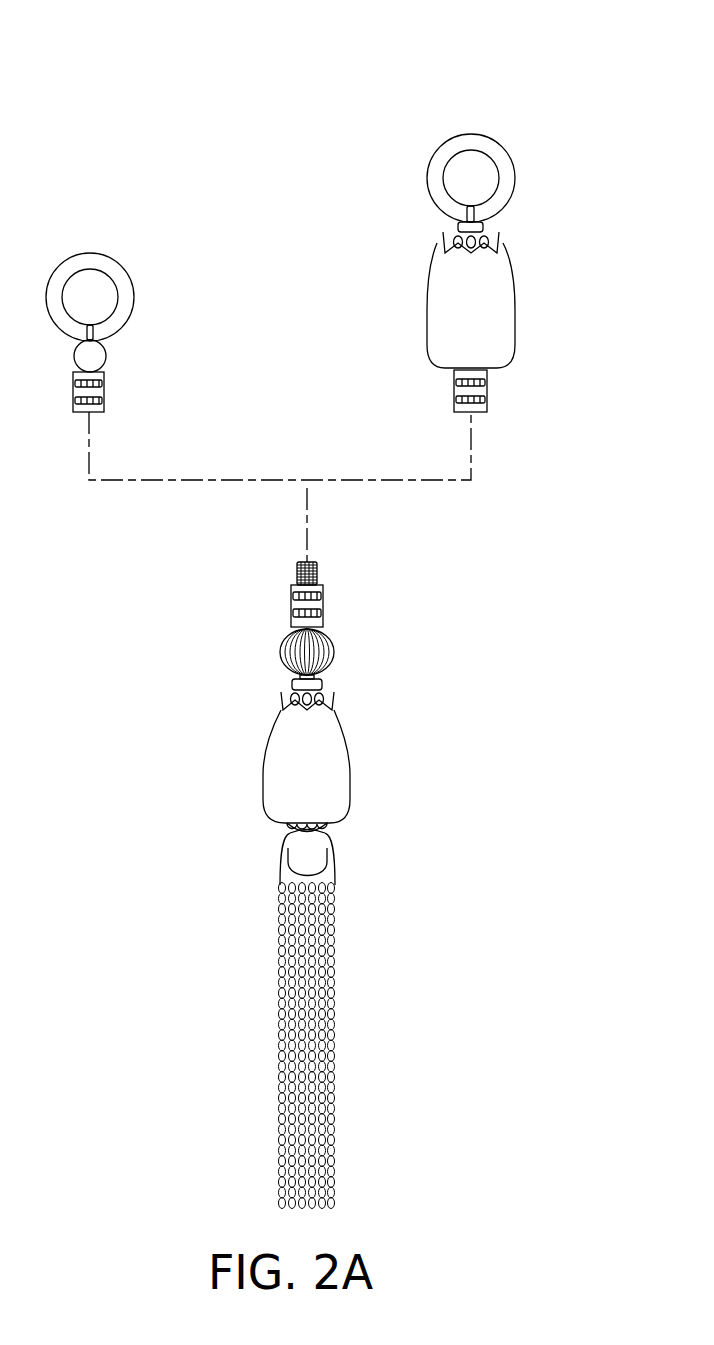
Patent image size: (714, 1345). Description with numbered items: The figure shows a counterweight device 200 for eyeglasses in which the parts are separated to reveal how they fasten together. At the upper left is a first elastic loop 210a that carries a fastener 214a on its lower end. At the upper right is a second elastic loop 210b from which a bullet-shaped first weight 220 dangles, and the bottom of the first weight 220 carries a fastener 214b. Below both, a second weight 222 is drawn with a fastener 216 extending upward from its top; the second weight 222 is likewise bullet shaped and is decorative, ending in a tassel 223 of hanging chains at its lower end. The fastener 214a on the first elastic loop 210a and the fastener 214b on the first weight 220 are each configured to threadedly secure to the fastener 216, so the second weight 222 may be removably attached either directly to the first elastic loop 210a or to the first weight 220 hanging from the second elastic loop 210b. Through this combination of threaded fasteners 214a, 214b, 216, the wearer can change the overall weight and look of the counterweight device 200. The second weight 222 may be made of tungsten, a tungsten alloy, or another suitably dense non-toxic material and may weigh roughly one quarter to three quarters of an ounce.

The counterweight device 200 is at (570, 108).
The first elastic loop 210a is at (125, 297).
The second elastic loop 210b is at (506, 179).
The fastener 214a is at (97, 392).
The fastener 214b is at (475, 390).
The fastener 216 is at (313, 607).
The first weight 220 is at (507, 317).
The second weight 222 is at (326, 772).
The tassel 223 is at (330, 1047).